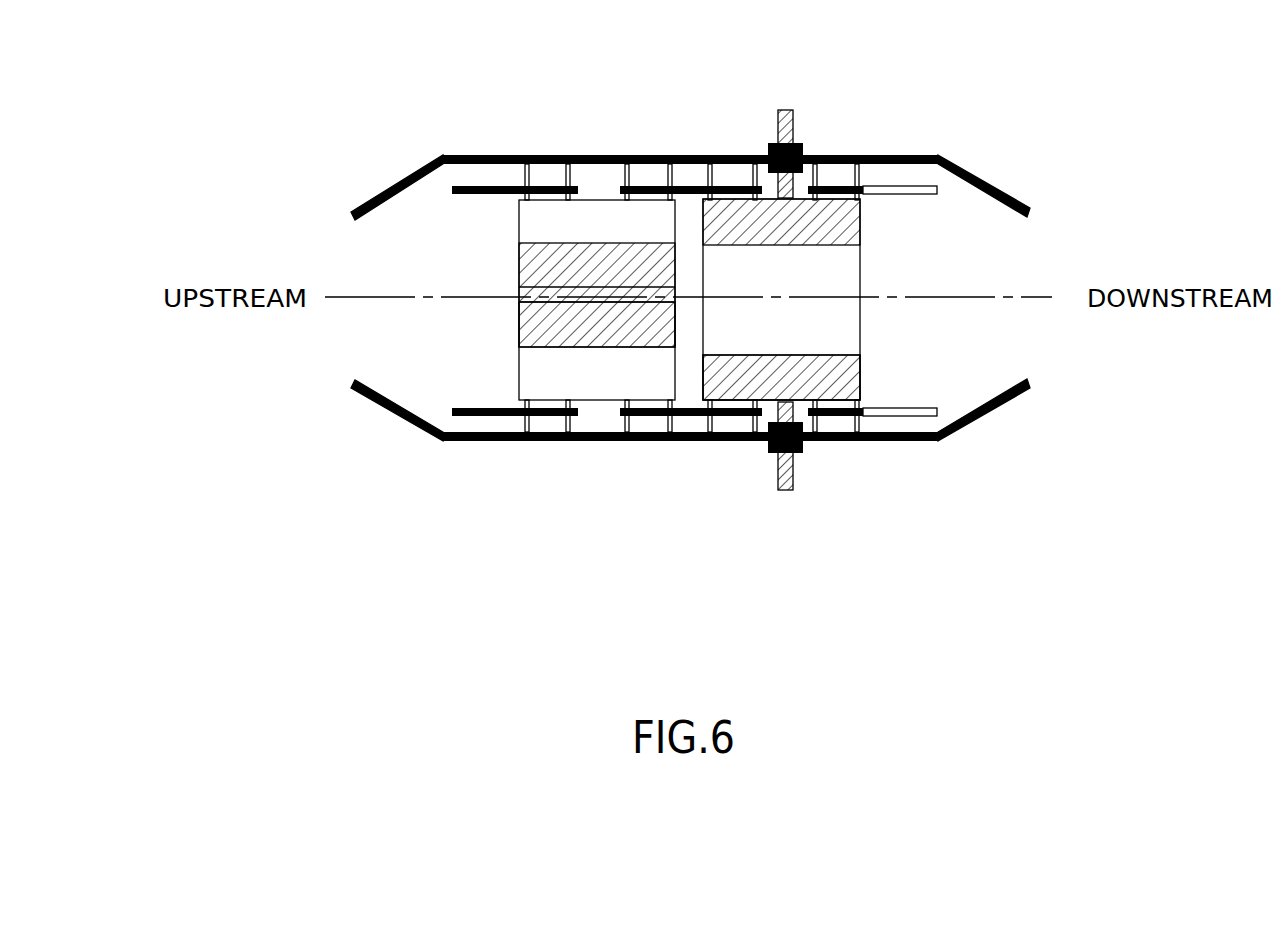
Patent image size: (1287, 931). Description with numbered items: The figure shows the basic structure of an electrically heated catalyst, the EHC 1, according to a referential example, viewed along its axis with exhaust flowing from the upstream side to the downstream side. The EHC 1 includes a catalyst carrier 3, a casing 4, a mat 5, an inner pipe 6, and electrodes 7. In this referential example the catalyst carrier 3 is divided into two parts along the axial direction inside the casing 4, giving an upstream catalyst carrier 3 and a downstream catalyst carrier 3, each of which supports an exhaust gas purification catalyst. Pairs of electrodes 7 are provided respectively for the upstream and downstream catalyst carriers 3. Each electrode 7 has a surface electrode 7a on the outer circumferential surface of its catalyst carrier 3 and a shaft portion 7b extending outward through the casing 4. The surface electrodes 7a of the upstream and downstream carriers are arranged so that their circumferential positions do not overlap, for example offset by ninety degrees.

The EHC 1 is at (925, 92).
The catalyst carrier 3 is at (718, 275).
The casing 4 is at (480, 155).
The mat 5 is at (542, 432).
The inner pipe 6 is at (422, 156).
The electrodes 7 is at (566, 253).
The surface electrodes 7a is at (600, 333).
The electrode shaft portion 7b is at (778, 120).